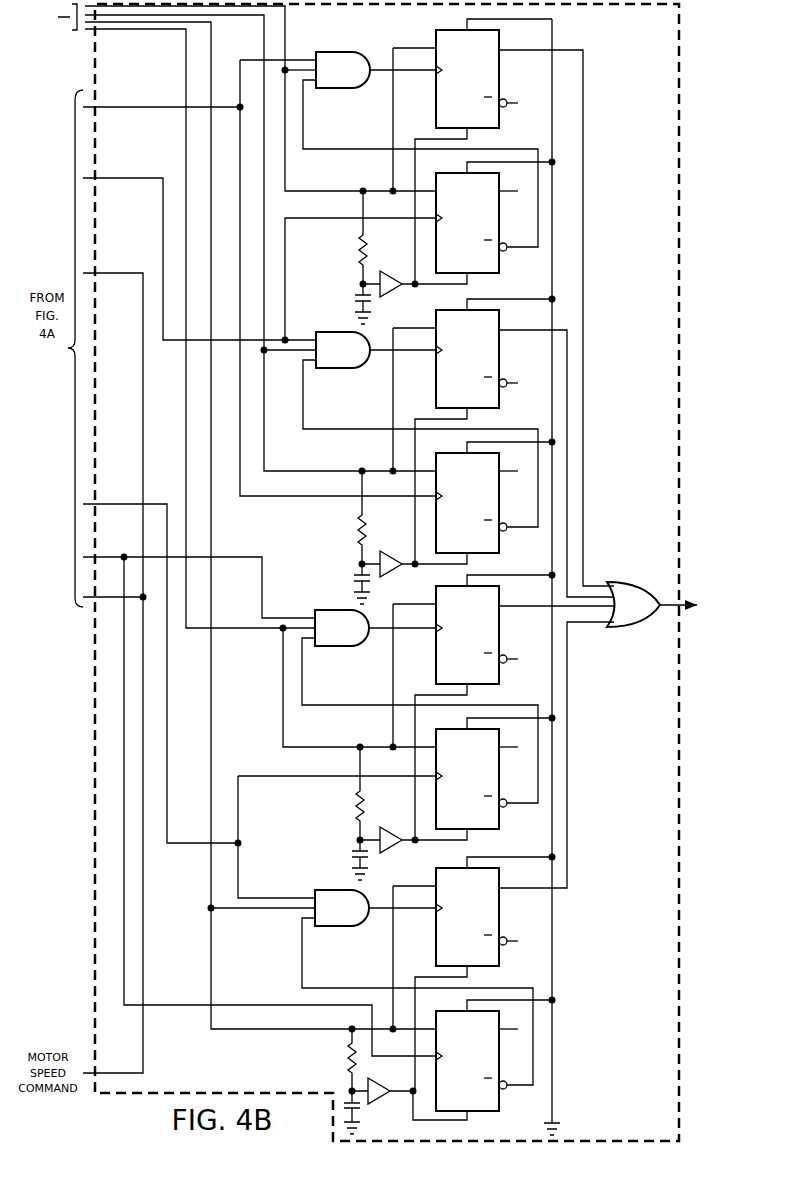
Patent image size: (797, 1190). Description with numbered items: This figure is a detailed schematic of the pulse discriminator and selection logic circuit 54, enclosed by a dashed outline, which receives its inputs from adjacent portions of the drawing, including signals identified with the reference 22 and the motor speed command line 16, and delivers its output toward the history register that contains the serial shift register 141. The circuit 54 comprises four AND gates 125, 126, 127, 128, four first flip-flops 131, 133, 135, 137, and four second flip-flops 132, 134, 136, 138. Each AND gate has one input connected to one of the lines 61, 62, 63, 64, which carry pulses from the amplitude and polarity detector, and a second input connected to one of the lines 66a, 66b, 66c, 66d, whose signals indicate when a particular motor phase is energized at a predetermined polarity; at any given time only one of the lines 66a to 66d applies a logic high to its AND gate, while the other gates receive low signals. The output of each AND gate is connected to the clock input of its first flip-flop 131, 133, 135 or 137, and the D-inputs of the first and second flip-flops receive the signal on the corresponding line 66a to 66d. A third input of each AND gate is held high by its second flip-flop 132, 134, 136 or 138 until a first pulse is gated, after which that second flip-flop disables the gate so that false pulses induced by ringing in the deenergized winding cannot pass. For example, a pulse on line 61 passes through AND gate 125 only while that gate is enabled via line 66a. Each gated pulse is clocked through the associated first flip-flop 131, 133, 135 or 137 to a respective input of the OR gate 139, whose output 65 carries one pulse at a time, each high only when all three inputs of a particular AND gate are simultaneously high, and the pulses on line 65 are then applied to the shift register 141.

The signal lines from FIG. 4D 22 is at (52, 18).
The line 66a is at (151, 8).
The line 66b is at (160, 16).
The line 66c is at (170, 24).
The line 66d is at (186, 30).
The line 61 is at (93, 108).
The line 62 is at (90, 178).
The motor speed command line 16 is at (90, 273).
The line 63 is at (90, 504).
The line 64 is at (90, 557).
The pulse discriminator and selection logic circuit 54 is at (655, 472).
The AND gate 125 is at (342, 60).
The AND gate 126 is at (345, 343).
The AND gate 127 is at (343, 622).
The AND gate 128 is at (343, 903).
The first flip-flop 131 is at (498, 44).
The second flip-flop 132 is at (489, 178).
The first flip-flop 133 is at (493, 330).
The second flip-flop 134 is at (489, 458).
The first flip-flop 135 is at (493, 612).
The second flip-flop 136 is at (489, 734).
The first flip-flop 137 is at (493, 870).
The second flip-flop 138 is at (480, 1022).
The OR gate 139 is at (634, 596).
The output line 65 is at (667, 608).
The serial shift register 141 is at (712, 613).